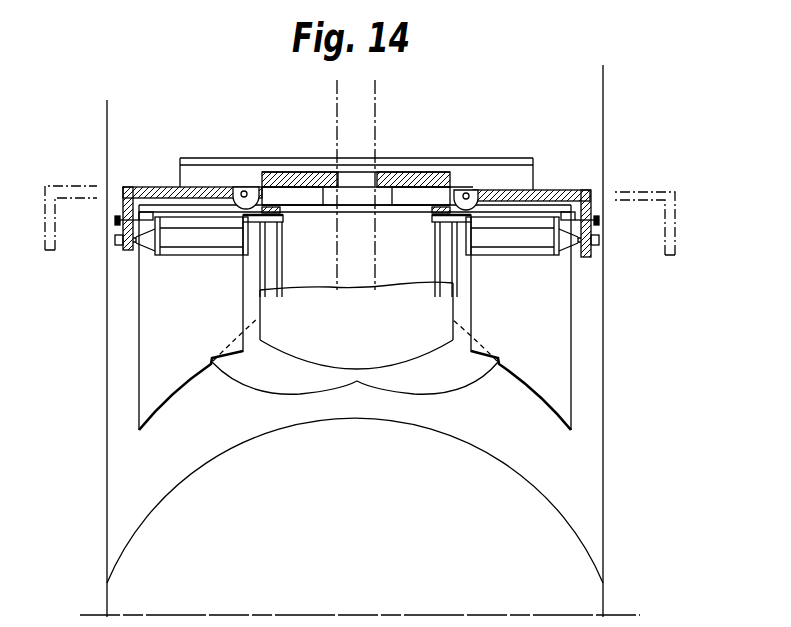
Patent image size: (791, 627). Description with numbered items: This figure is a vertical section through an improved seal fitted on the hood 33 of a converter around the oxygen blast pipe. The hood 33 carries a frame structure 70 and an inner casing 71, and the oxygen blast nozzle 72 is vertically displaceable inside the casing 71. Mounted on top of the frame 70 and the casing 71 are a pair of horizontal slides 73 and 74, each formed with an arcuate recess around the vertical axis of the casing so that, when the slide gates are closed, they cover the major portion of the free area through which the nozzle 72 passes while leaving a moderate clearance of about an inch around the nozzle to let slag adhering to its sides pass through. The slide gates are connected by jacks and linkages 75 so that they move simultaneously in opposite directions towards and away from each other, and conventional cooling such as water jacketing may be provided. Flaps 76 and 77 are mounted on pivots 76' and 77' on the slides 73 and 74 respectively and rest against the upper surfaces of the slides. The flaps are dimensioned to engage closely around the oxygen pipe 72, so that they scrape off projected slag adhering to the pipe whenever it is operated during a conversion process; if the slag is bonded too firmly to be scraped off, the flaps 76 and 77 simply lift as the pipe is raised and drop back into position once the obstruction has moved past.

The hood 33 is at (513, 395).
The frame structure 70 is at (592, 318).
The inner casing 71 is at (462, 313).
The oxygen blast nozzle 72 is at (372, 110).
The horizontal slide 73 is at (300, 202).
The horizontal slide 74 is at (407, 207).
The jacks and linkages 75 is at (145, 188).
The flap 76 is at (300, 154).
The pivot 76' is at (228, 155).
The flap 77 is at (413, 156).
The pivot 77' is at (494, 155).